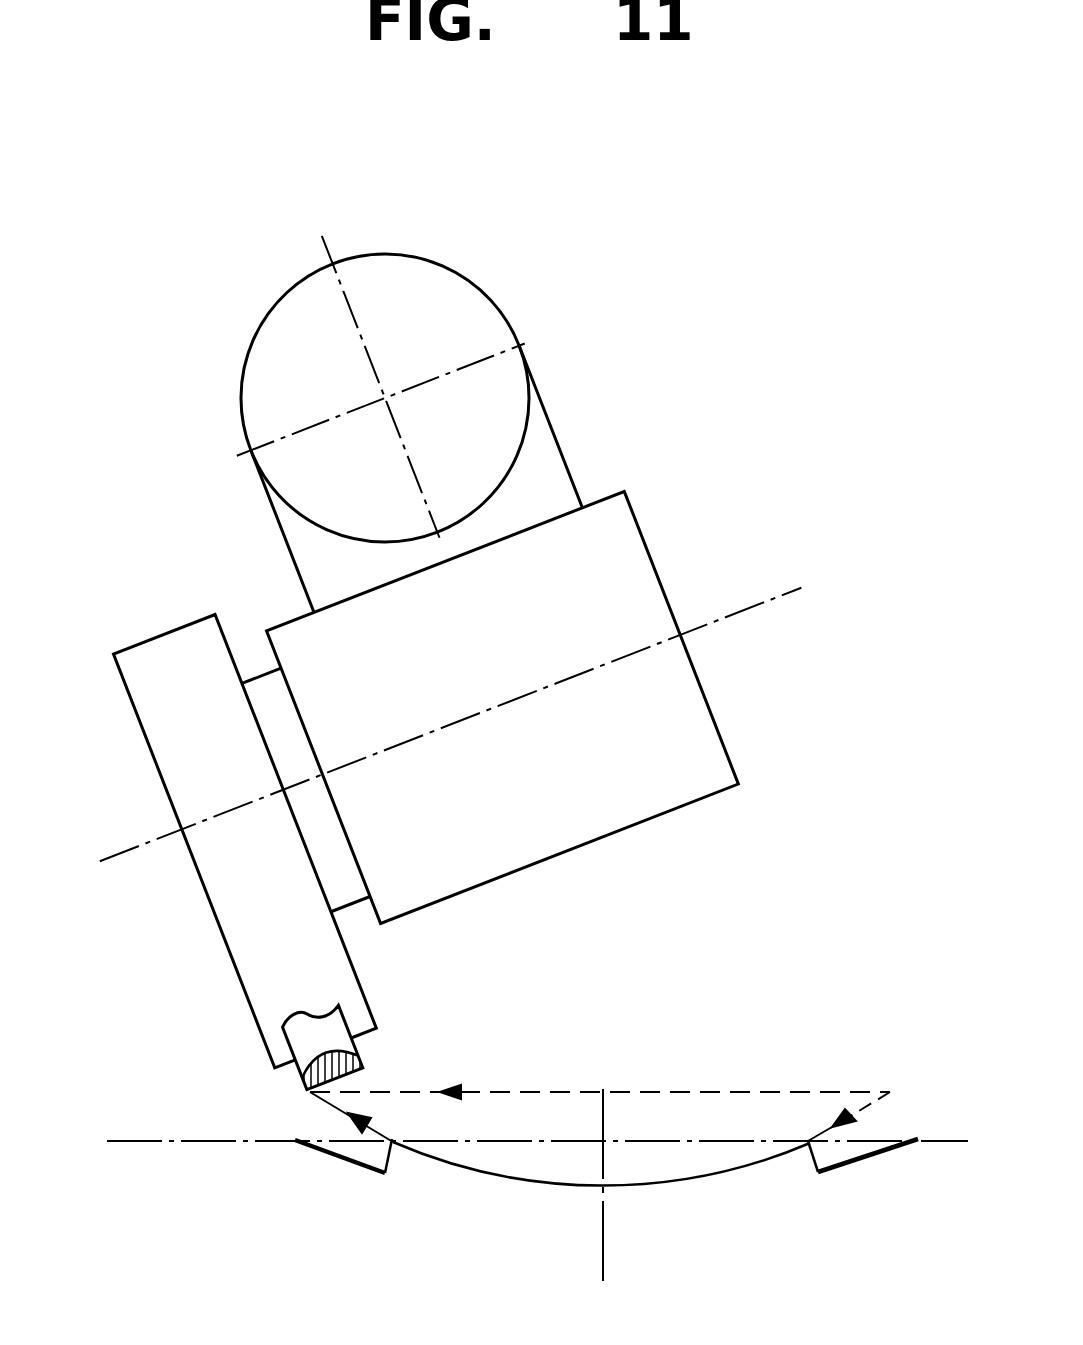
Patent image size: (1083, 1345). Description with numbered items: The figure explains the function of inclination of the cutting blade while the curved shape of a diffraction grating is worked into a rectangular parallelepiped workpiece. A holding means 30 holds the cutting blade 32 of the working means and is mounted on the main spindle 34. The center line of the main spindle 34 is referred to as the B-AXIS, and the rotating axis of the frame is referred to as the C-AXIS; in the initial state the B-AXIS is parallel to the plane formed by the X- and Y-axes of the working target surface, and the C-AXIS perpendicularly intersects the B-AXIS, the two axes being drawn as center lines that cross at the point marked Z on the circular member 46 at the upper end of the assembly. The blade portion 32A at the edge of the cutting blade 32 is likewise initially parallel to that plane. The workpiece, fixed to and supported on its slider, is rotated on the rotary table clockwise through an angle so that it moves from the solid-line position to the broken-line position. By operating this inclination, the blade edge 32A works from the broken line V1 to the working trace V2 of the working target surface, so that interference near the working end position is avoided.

The holding means 30 is at (234, 914).
The cutting blade 32 is at (310, 1093).
The blade edge 32A is at (310, 1094).
The main spindle 34 is at (713, 750).
The C-axis spindle 46 is at (546, 483).
The broken line V1 is at (312, 1096).
The working trace V2 is at (684, 1168).
The Z reference point Z is at (379, 436).
The C-axis C-AXIS is at (385, 398).
The B-axis B-AXIS is at (745, 607).